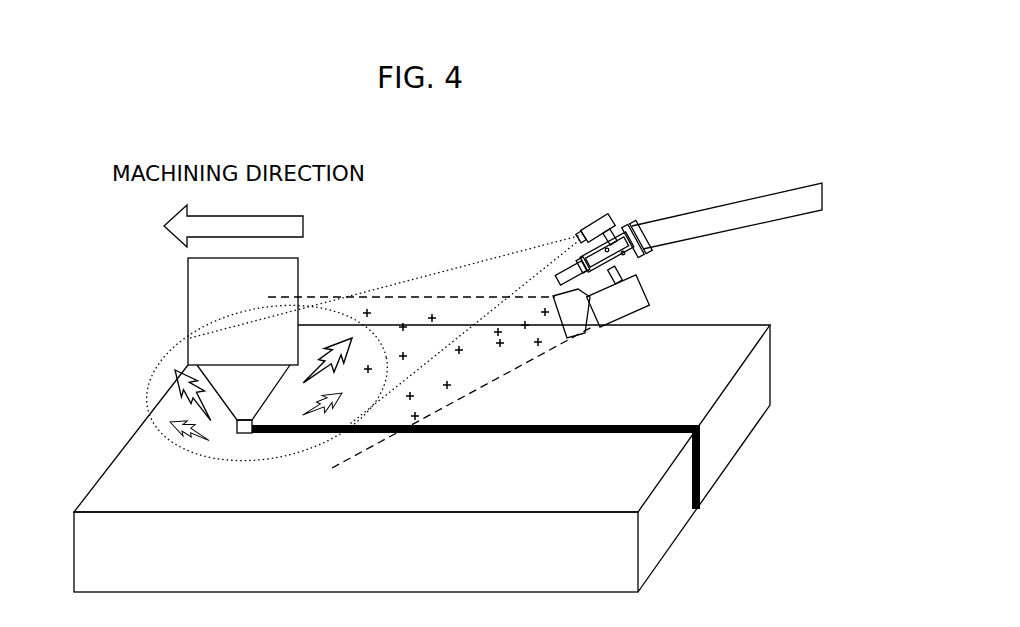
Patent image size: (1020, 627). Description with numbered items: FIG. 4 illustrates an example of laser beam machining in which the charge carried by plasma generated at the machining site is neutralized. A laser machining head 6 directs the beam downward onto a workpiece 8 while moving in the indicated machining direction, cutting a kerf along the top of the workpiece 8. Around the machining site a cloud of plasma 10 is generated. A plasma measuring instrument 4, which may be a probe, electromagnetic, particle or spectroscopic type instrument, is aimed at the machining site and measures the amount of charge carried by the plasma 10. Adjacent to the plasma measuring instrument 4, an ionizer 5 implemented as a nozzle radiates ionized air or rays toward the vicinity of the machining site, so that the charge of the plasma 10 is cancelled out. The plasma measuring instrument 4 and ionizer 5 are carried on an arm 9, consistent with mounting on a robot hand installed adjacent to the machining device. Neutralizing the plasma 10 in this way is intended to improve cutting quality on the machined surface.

The plasma measuring instrument 4 is at (605, 215).
The ionizer 5 is at (622, 323).
The laser machining head 6 is at (188, 306).
The workpiece 8 is at (658, 325).
The arm 9 is at (668, 217).
The plasma 10 is at (165, 388).